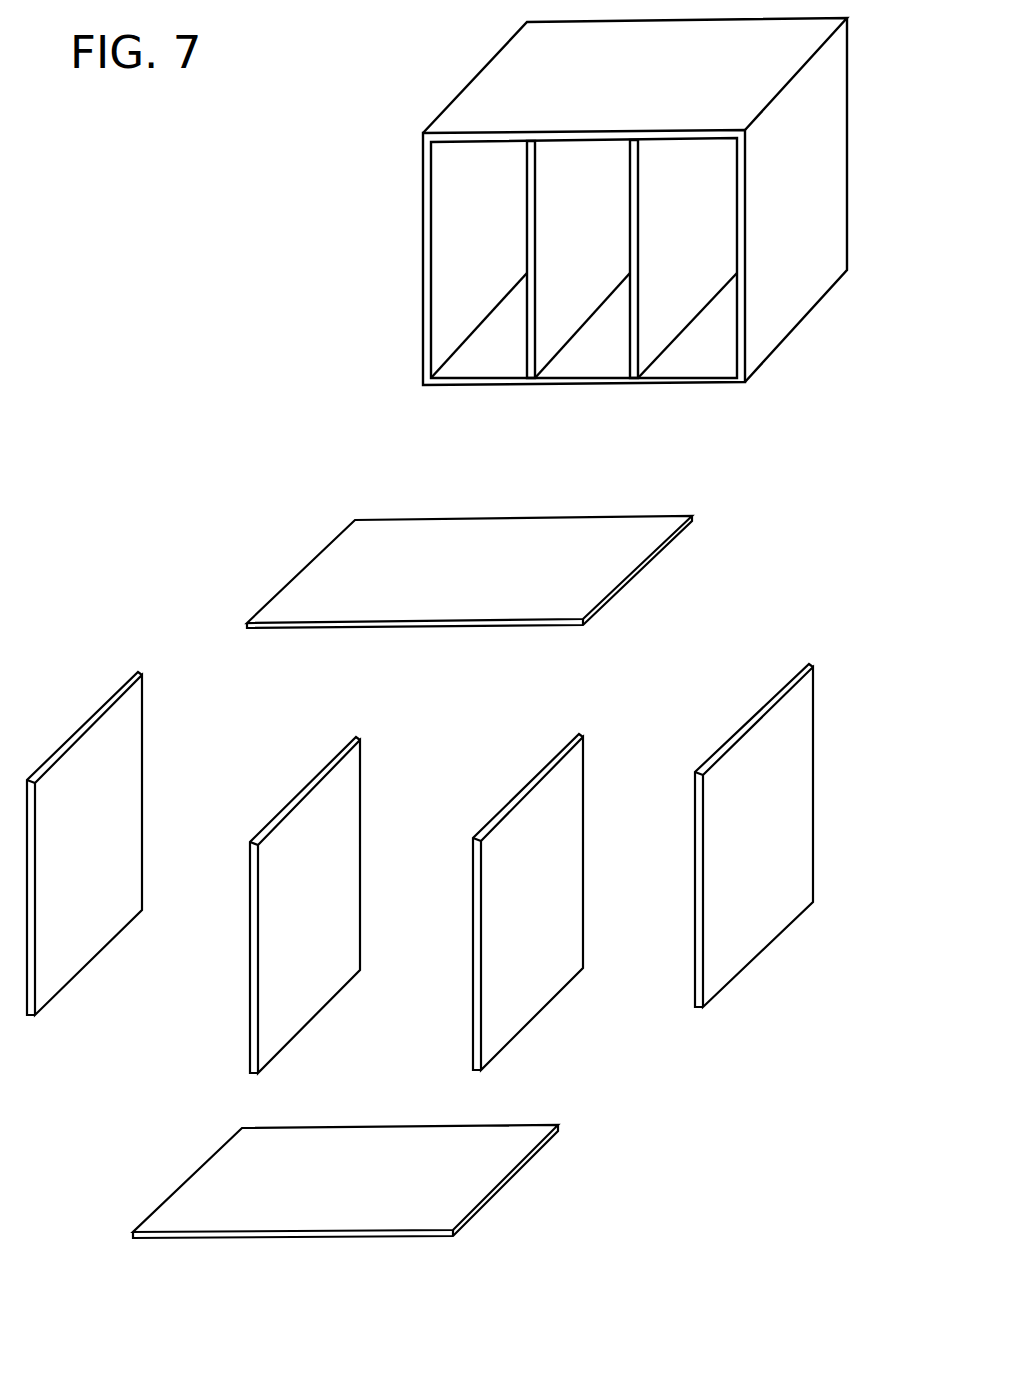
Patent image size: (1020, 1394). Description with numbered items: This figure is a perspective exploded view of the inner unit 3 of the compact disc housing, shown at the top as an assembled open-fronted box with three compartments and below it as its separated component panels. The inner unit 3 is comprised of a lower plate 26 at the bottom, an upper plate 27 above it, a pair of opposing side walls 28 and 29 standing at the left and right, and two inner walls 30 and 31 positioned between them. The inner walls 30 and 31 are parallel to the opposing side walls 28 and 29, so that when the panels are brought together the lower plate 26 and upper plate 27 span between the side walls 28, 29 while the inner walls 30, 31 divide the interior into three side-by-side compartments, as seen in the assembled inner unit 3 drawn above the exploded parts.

The inner unit 3 is at (770, 287).
The lower plate 26 is at (453, 1202).
The upper plate 27 is at (585, 578).
The side wall 28 is at (115, 875).
The side wall 29 is at (767, 873).
The inner wall 30 is at (272, 1023).
The inner wall 31 is at (495, 1022).